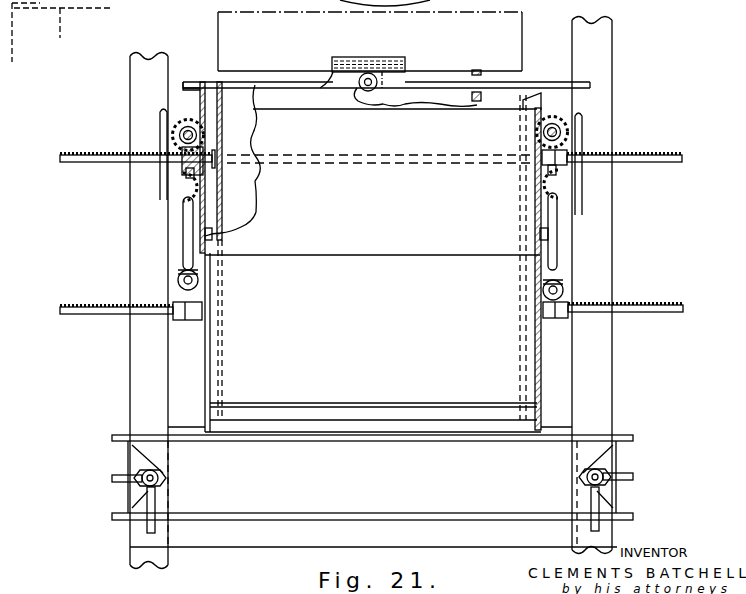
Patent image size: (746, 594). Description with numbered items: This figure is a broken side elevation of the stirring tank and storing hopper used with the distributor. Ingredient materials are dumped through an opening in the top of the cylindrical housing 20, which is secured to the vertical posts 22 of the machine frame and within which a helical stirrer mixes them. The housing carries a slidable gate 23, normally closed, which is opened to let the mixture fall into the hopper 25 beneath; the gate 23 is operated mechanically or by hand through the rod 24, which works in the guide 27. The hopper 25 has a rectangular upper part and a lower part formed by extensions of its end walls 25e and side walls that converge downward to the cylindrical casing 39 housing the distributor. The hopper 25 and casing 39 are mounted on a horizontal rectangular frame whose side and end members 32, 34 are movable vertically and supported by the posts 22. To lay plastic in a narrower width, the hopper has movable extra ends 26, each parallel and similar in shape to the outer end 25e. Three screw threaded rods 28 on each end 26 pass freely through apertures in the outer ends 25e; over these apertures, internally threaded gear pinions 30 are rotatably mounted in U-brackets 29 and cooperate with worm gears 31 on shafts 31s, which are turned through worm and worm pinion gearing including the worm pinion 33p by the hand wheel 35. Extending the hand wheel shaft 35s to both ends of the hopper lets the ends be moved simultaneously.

The cylindrical housing 20 is at (232, 40).
The vertical posts 22 is at (135, 388).
The slidable gate 23 is at (337, 73).
The rod 24 is at (442, 84).
The hopper 25 is at (372, 170).
The end walls 25e is at (203, 235).
The extra ends 26 is at (242, 214).
The guide 27 is at (478, 102).
The screw threaded rods 28 is at (60, 158).
The U-brackets 29 is at (553, 166).
The internally threaded gear pinions 30 is at (182, 172).
The worm gears 31 is at (180, 285).
The shafts 31s is at (185, 224).
The side members 32 is at (372, 494).
The worm pinion 33p is at (172, 128).
The end members 34 is at (668, 463).
The hand wheel 35 is at (582, 123).
The hand wheel shaft 35s is at (364, 166).
The cylindrical casing 39 is at (415, 430).